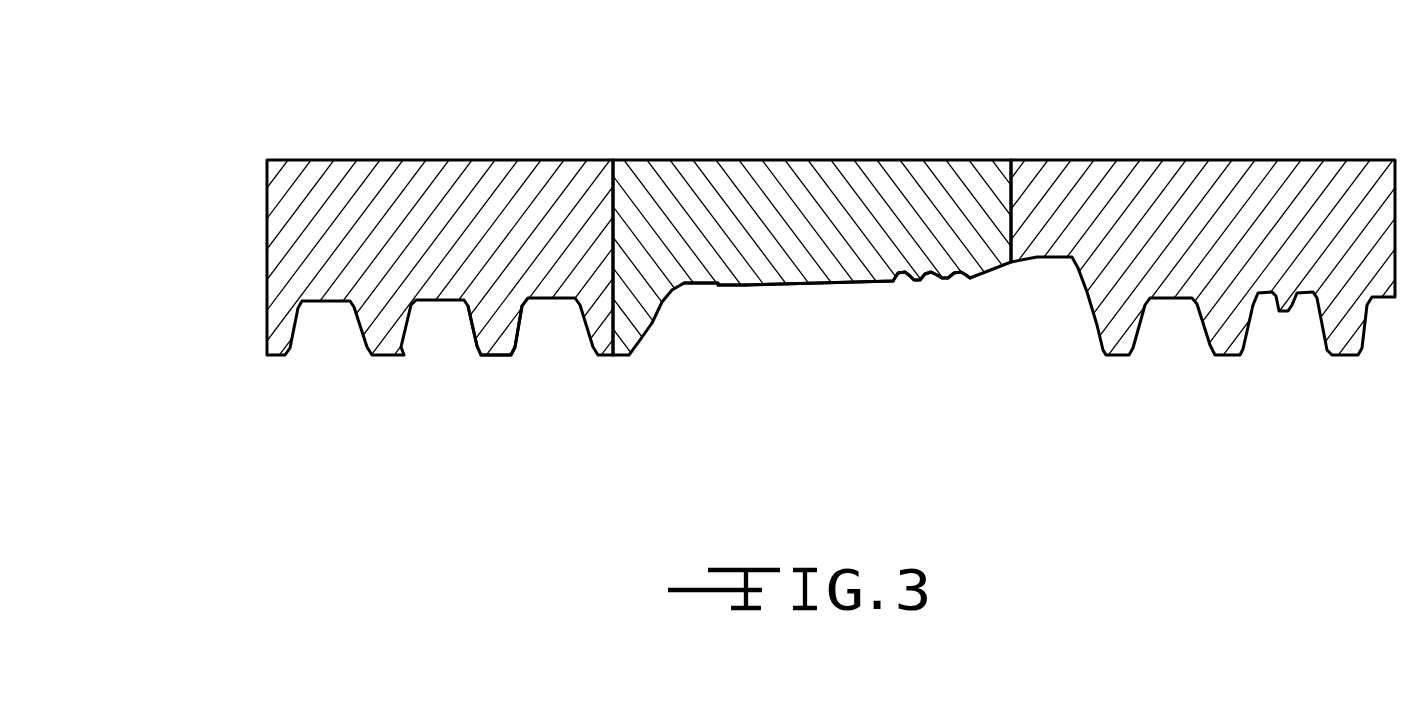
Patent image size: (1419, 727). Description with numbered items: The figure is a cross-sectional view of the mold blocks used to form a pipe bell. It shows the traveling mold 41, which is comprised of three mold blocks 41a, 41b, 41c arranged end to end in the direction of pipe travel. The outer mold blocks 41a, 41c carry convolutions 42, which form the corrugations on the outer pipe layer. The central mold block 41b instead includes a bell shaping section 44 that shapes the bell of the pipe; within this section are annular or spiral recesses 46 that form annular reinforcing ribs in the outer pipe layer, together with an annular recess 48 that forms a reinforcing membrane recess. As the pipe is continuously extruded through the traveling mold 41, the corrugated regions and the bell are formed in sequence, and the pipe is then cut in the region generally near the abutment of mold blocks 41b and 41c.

The traveling mold 41 is at (746, 256).
The mold block 41a is at (477, 160).
The mold block 41b is at (812, 160).
The mold block 41c is at (1188, 160).
The convolutions 42 is at (479, 350).
The bell shaping section 44 is at (857, 307).
The annular or spiral recesses 46 is at (940, 280).
The annular recess 48 is at (719, 285).